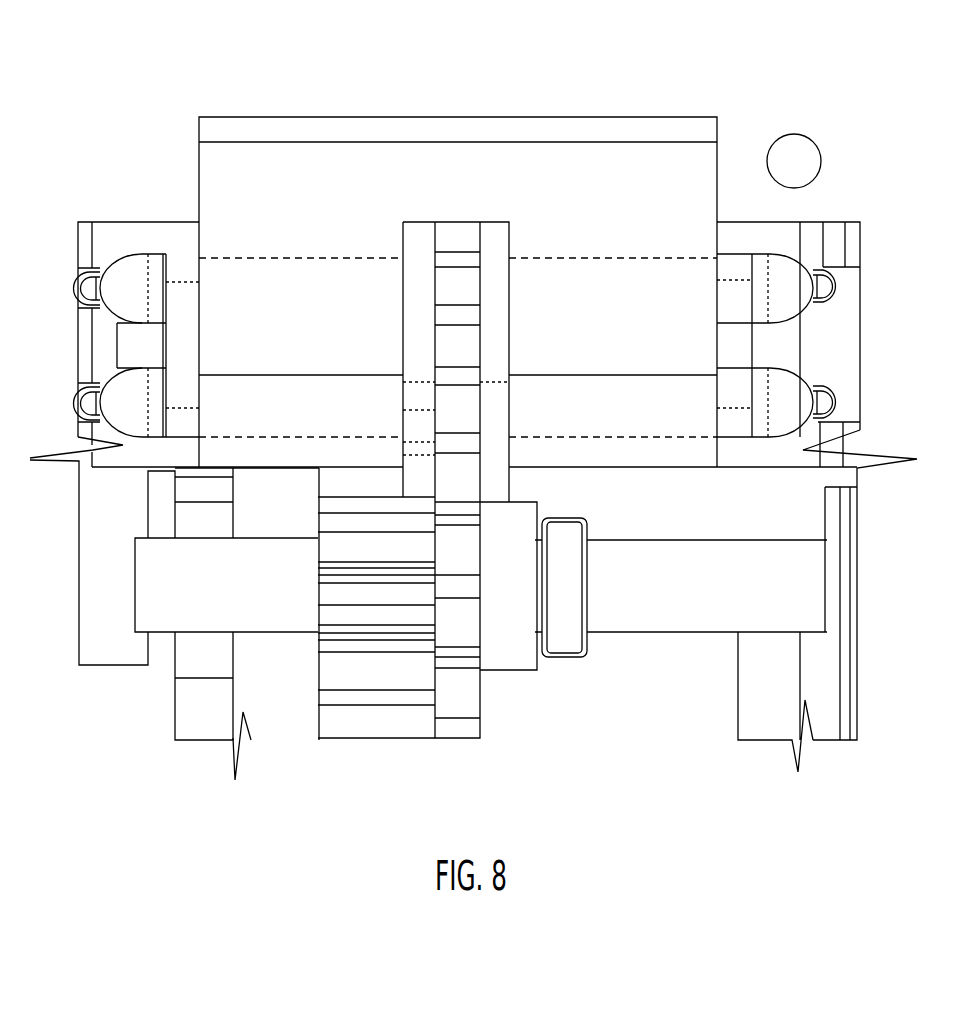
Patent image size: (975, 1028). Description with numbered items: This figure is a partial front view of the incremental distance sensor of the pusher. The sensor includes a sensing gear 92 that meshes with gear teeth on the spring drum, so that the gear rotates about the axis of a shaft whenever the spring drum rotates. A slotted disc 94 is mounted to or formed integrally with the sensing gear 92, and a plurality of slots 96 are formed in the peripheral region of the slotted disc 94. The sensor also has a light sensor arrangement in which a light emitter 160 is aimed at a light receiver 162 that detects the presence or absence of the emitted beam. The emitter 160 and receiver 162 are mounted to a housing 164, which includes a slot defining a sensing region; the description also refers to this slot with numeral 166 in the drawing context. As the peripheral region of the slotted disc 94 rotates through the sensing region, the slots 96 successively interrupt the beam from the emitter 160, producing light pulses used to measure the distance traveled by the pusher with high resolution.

The light emitter 160 is at (620, 258).
The light receiver 162 is at (338, 258).
The housing 164 is at (531, 130).
The central plate 166 is at (423, 222).
The sensing gear 92 is at (320, 663).
The slotted disc 94 is at (482, 690).
The slots 96 is at (460, 600).